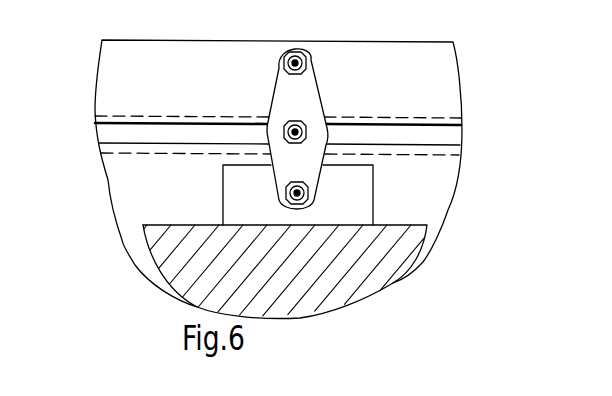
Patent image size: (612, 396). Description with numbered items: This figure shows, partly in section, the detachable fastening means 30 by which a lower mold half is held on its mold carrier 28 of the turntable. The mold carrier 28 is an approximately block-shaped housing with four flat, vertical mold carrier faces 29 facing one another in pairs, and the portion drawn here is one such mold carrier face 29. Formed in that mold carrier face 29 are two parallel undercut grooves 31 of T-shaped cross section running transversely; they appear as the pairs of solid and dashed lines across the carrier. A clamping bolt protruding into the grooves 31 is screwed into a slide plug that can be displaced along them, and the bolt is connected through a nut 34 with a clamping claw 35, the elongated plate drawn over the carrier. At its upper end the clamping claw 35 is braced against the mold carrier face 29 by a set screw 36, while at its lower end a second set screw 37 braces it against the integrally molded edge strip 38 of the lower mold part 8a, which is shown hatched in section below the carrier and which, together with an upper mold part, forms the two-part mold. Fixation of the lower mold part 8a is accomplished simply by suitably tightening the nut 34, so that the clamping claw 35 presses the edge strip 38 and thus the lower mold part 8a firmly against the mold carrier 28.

The lower mold part 8a is at (365, 287).
The mold carrier 28 is at (458, 83).
The mold carrier face 29 is at (419, 97).
The fastening means 30 is at (95, 129).
The undercut groove 31 is at (113, 129).
The nut 34 is at (300, 123).
The clamping claw 35 is at (310, 75).
The set screw 36 is at (295, 51).
The second set screw 37 is at (306, 192).
The edge strip 38 is at (233, 188).